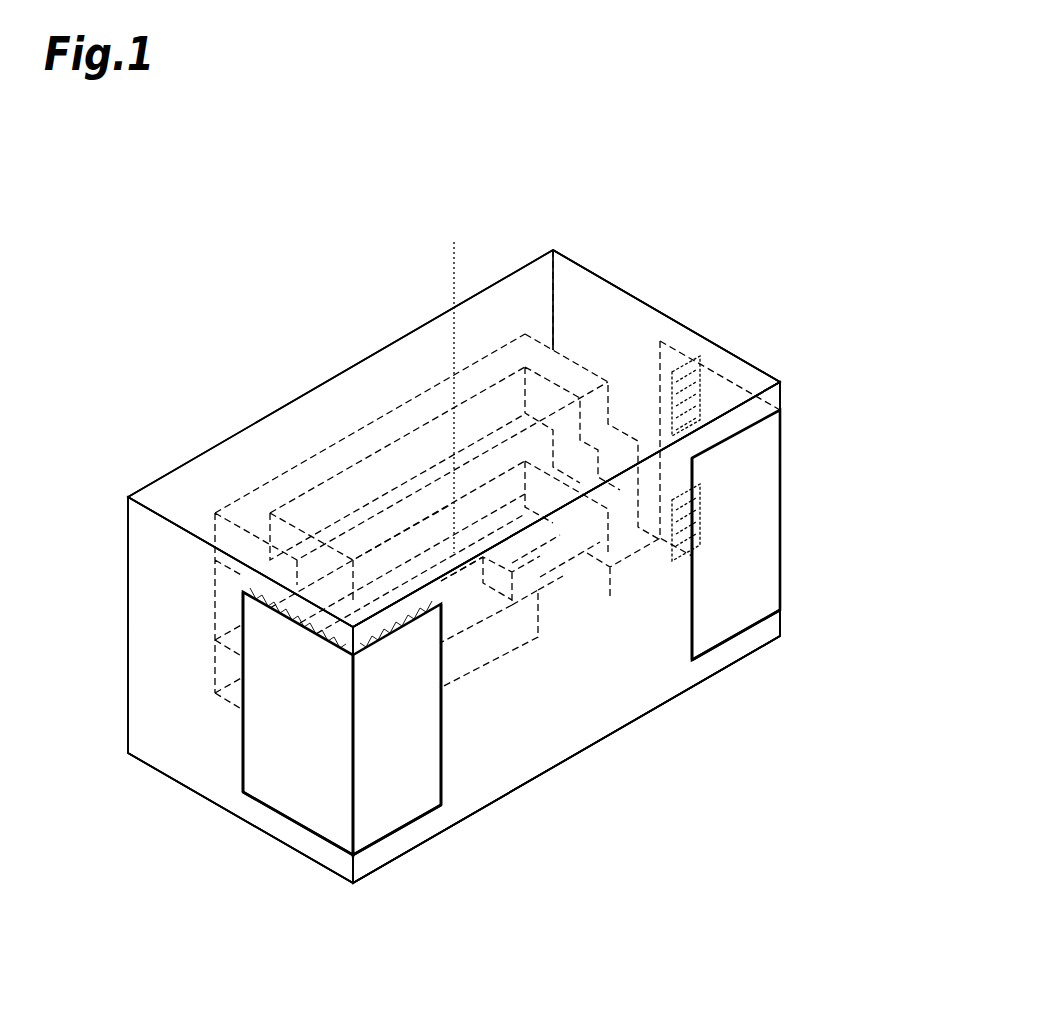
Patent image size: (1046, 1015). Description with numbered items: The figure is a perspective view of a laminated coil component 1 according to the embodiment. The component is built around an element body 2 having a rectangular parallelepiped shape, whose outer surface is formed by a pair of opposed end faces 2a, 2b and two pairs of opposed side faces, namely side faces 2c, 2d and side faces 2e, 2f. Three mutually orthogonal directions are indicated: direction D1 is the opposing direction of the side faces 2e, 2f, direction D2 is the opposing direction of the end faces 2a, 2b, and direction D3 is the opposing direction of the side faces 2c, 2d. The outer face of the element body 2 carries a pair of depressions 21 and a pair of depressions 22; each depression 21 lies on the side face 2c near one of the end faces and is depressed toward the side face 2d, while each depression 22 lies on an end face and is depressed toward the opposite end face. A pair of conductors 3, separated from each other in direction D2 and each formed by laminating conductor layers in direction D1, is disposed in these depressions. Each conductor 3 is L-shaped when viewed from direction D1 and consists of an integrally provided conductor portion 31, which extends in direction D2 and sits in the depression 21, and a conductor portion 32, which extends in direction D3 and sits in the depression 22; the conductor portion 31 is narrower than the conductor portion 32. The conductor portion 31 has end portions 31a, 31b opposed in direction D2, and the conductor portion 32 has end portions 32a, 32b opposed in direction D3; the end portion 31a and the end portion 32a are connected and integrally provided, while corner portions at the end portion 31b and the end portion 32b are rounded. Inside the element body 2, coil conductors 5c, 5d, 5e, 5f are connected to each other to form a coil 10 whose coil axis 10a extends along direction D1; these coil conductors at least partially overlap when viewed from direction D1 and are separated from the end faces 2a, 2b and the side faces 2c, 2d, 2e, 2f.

The laminated coil component 1 is at (516, 536).
The element body 2 is at (424, 528).
The end face 2a is at (182, 760).
The end face 2b is at (623, 327).
The side face 2c is at (573, 700).
The side face 2d is at (310, 430).
The side face 2e is at (182, 497).
The side face 2f is at (507, 735).
The conductor 3 is at (548, 668).
The conductor portion 31 is at (752, 556).
The conductor portion 32 is at (745, 458).
The end portion 31a is at (548, 751).
The end portion 32a is at (788, 597).
The end portion 31b is at (684, 634).
The end portion 32b is at (240, 762).
The coil conductor 5c is at (333, 507).
The coil conductor 5d is at (503, 633).
The coil conductor 5e is at (557, 565).
The coil conductor 5f is at (253, 510).
The coil 10 is at (428, 517).
The coil axis 10a is at (452, 298).
The depression 21 is at (692, 441).
The depression 22 is at (674, 363).
The direction D1 is at (877, 322).
The direction D2 is at (695, 858).
The direction D3 is at (190, 975).